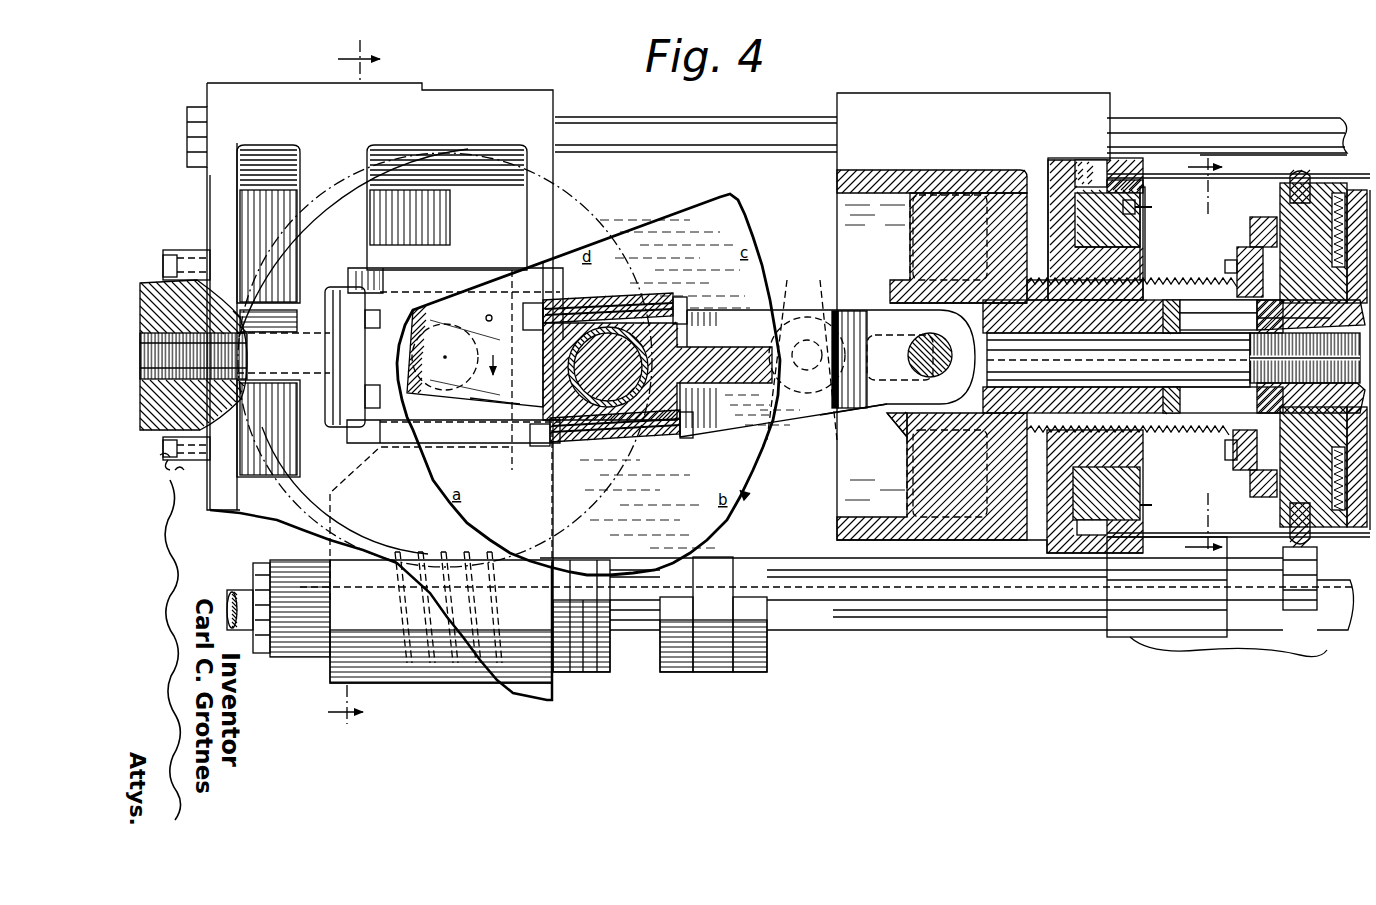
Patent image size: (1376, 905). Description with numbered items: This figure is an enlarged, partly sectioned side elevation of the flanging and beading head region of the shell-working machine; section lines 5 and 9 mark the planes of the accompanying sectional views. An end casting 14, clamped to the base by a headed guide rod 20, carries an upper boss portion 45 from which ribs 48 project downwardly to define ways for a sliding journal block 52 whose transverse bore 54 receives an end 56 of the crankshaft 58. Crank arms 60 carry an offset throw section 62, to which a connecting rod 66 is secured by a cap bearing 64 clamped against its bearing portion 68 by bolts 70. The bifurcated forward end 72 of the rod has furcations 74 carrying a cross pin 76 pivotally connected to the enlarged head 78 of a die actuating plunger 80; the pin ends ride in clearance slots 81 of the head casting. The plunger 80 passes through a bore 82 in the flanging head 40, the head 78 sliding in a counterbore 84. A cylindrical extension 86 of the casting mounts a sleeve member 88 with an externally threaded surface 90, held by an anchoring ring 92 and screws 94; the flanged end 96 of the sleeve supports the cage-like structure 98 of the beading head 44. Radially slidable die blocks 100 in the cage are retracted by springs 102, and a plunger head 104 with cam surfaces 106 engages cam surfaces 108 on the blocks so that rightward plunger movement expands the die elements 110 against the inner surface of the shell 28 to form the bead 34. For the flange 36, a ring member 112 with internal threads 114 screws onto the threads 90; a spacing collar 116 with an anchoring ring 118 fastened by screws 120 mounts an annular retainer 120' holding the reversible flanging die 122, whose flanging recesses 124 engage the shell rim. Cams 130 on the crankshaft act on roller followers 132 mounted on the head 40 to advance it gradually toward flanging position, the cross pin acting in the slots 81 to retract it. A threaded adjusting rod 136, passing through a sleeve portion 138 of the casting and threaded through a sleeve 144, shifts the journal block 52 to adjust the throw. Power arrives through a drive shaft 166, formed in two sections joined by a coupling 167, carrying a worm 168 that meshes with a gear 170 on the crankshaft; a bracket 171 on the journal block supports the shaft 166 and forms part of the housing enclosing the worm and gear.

The section line 5- 5 is at (355, 388).
The section line 9- 9 is at (1210, 358).
The end casting 14 is at (210, 220).
The headed guide rod 20 is at (789, 558).
The shell 28 is at (1197, 172).
The bead 34 is at (1303, 170).
The flange 36 is at (1238, 346).
The flanging head 40 is at (990, 323).
The beading head 44 is at (1325, 356).
The upper boss-like portion 45 is at (490, 102).
The rib 48 is at (447, 207).
The journal block 52 is at (410, 270).
The central transverse bore 54 is at (470, 340).
The crankshaft end 56 is at (436, 306).
The crankshaft 58 is at (489, 312).
The crank arm 60 is at (494, 398).
The offset throw section 62 is at (640, 360).
The cap bearing 64 is at (585, 298).
The connecting rod 66 is at (745, 310).
The bearing portion 68 is at (652, 318).
The bolt 70 is at (612, 300).
The bifurcated forward end 72 is at (833, 320).
The furcation 74 is at (913, 320).
The cross pin 76 is at (952, 356).
The enlarged head 78 is at (940, 458).
The die actuating plunger 80 is at (1118, 360).
The clearance slot 81 is at (872, 406).
The bore 82 is at (1150, 415).
The counterbore 84 is at (892, 305).
The cylindrical extension 86 is at (1083, 302).
The sleeve member 88 is at (1165, 285).
The externally threaded surface 90 is at (1157, 287).
The anchoring ring 92 is at (1185, 310).
The screw 94 is at (1185, 318).
The flanged forward end 96 is at (1242, 258).
The cage-like structure 98 is at (1258, 225).
The die block 100 is at (1290, 512).
The spring 102 is at (1332, 240).
The plunger head 104 is at (1270, 400).
The cam surface 106 is at (1293, 314).
The cam surface 108 is at (1322, 312).
The die element 110 is at (1312, 180).
The ring member 112 is at (1146, 230).
The internal threads 114 is at (1120, 248).
The spacing collar 116 is at (1152, 210).
The anchoring ring 118 is at (1137, 188).
The screw 120 is at (1166, 197).
The annular retainer 120' is at (1101, 495).
The reversible flanging die 122 is at (1097, 158).
The flanging recess 124 is at (1113, 170).
The cam 130 is at (738, 228).
The roller 132 is at (788, 320).
The threaded adjusting rod 136 is at (336, 335).
The sleeve portion 138 is at (268, 312).
The sleeve 144 is at (150, 283).
The drive shaft 166 is at (630, 625).
The coupling 167 is at (767, 645).
The worm 168 is at (397, 658).
The gear 170 is at (622, 232).
The bracket 171 is at (320, 655).